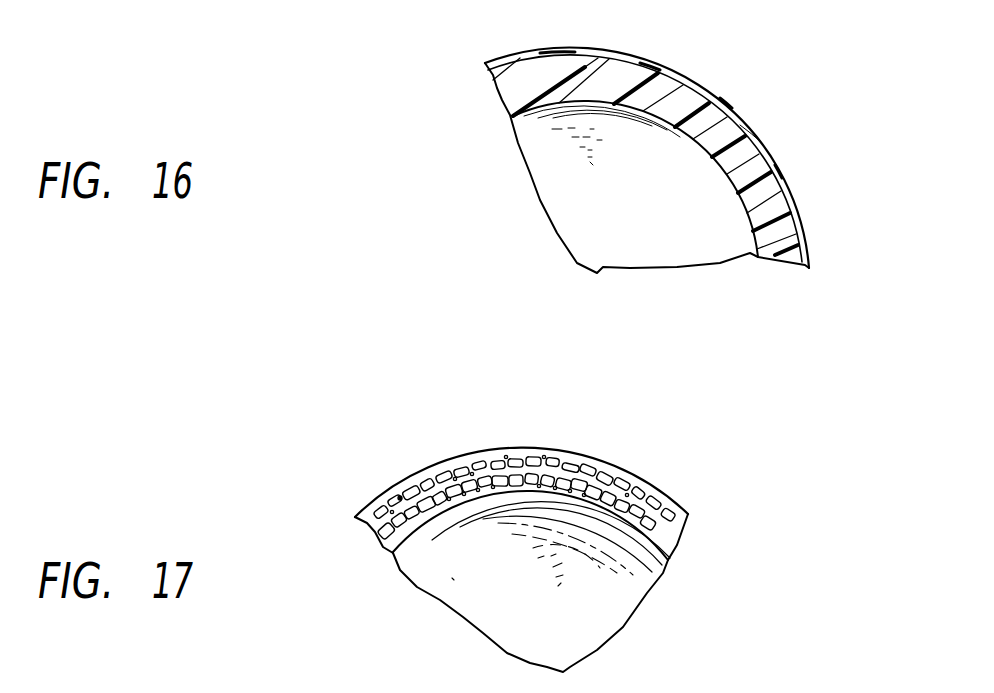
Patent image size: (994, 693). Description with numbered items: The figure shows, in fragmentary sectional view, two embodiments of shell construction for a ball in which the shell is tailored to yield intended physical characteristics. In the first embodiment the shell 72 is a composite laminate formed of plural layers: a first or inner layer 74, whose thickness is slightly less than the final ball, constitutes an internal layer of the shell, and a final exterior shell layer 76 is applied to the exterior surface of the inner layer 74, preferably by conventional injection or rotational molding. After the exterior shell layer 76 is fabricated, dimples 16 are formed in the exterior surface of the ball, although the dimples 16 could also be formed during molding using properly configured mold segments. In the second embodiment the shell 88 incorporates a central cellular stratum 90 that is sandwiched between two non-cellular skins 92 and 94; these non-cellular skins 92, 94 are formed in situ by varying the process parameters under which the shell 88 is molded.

In FIG. 16, the dimples 16 is at (813, 227).
In FIG. 16, the shell 72 is at (677, 72).
In FIG. 16, the inner layer 74 is at (502, 100).
In FIG. 16, the exterior shell layer 76 is at (752, 133).
In FIG. 17, the shell 88 is at (650, 483).
In FIG. 17, the central cellular stratum 90 is at (400, 497).
In FIG. 17, the non-cellular skin 92 is at (465, 463).
In FIG. 17, the non-cellular skin 94 is at (390, 557).